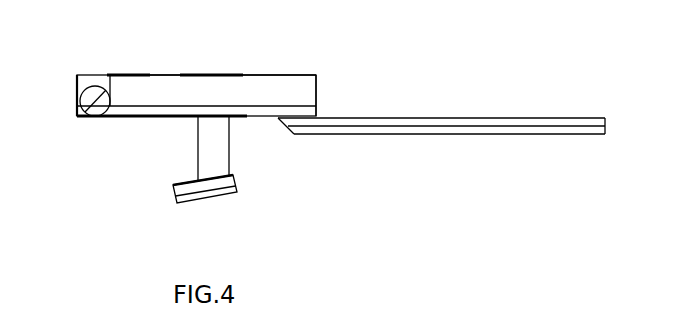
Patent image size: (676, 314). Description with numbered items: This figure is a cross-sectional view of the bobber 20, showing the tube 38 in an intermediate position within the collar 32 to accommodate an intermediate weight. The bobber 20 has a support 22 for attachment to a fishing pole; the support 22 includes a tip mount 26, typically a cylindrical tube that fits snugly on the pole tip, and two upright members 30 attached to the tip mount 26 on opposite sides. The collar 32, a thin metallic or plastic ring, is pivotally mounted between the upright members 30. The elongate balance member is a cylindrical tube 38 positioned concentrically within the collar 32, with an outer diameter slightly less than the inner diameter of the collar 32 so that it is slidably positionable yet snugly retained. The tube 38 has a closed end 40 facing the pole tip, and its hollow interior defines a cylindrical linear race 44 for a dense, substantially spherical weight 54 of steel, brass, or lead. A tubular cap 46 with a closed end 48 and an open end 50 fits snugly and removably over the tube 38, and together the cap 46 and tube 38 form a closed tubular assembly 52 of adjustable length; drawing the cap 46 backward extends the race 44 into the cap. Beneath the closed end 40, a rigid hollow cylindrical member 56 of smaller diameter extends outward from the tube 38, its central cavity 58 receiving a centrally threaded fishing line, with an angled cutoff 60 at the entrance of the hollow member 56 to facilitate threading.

The bobber 20 is at (346, 66).
The support 22 is at (228, 157).
The tip mount 26 is at (193, 203).
The upright members 30 is at (195, 157).
The collar 32 is at (210, 73).
The tube 38 is at (300, 73).
The closed end 40 is at (318, 93).
The race 44 is at (267, 73).
The cap 46 is at (92, 93).
The closed end 48 is at (80, 103).
The open end 50 is at (150, 73).
The tubular assembly 52 is at (135, 118).
The weight 54 is at (103, 75).
The hollow cylindrical member 56 is at (427, 115).
The central cavity 58 is at (607, 122).
The angled cutoff 60 is at (283, 118).